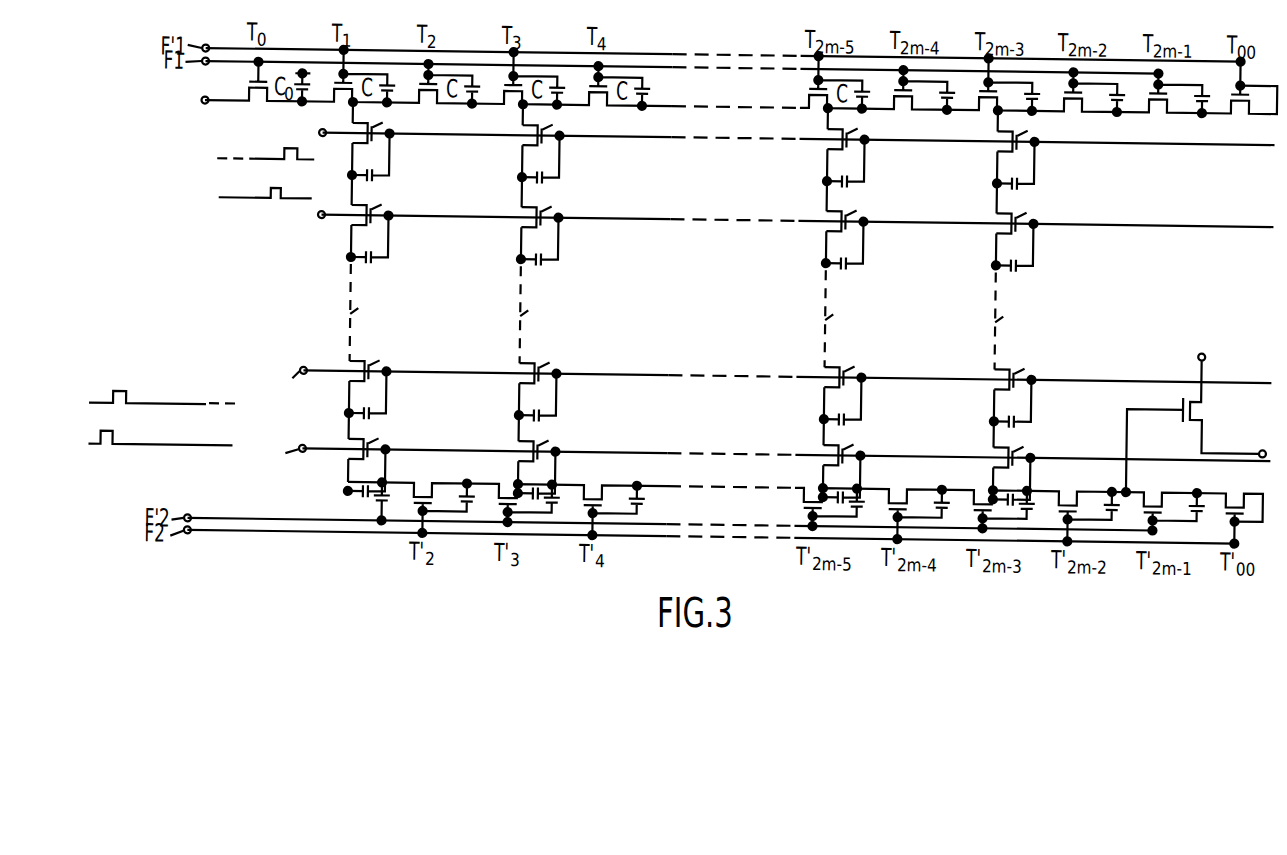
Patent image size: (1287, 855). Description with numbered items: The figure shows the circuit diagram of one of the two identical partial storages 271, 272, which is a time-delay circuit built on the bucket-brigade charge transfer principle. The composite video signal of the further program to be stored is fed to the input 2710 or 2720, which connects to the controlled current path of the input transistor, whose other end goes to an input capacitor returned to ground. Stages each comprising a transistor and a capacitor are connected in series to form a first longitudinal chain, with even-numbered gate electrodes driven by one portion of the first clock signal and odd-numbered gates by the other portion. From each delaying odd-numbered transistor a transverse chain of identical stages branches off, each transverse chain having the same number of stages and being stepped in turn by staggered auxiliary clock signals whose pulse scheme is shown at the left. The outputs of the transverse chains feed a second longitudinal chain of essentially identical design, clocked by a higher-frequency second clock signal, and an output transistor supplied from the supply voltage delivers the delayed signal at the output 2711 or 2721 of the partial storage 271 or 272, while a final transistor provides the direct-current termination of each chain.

The input of the first partial storage 2710 is at (711, 109).
The input of the second partial storage 2720 is at (711, 109).
The first partial storage 271 is at (681, 303).
The second partial storage 272 is at (770, 280).
The output of the first partial storage 2711 is at (815, 427).
The output of the second partial storage 2721 is at (814, 427).